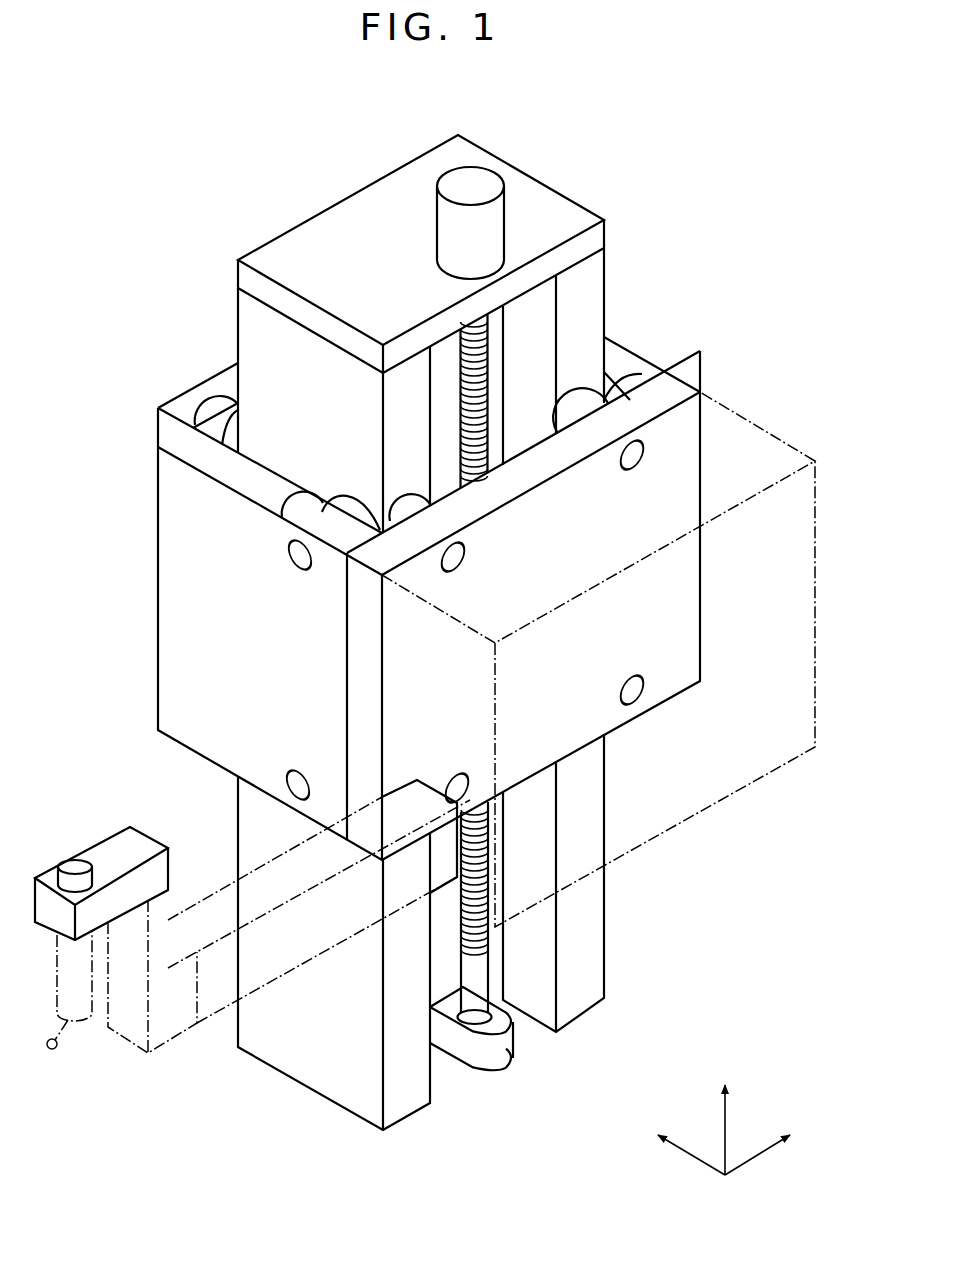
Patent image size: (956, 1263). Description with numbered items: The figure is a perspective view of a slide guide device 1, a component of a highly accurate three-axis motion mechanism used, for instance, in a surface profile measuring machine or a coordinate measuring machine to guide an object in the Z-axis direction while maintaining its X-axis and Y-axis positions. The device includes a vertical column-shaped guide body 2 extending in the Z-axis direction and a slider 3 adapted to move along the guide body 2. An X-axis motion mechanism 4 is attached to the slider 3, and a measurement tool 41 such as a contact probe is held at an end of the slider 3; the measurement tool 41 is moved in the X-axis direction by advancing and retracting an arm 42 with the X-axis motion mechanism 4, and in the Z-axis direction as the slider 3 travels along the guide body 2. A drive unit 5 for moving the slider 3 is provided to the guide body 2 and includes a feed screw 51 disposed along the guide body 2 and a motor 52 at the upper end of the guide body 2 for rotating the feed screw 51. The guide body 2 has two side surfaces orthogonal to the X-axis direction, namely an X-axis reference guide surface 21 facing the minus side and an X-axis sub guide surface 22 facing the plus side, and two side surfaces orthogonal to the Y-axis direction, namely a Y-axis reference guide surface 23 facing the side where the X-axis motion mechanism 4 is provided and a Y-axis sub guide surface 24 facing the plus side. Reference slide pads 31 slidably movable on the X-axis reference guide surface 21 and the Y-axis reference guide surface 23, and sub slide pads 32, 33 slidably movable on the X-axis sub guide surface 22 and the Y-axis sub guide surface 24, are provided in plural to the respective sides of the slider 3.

The slide guide device 1 is at (663, 96).
The guide body 2 is at (622, 224).
The slider 3 is at (704, 366).
The X-axis motion mechanism 4 is at (750, 407).
The drive unit 5 is at (494, 140).
The X-axis reference guide surface 21 is at (262, 340).
The X-axis sub guide surface 22 is at (604, 268).
The Y-axis reference guide surface 23 is at (590, 310).
The Y-axis sub guide surface 24 is at (238, 300).
The reference slide pads 31 is at (318, 489).
The sub slide pad 32 is at (618, 388).
The sub slide pad 33 is at (222, 410).
The measurement tool 41 is at (110, 840).
The arm 42 is at (200, 898).
The feed screw 51 is at (458, 350).
The motor 52 is at (437, 222).